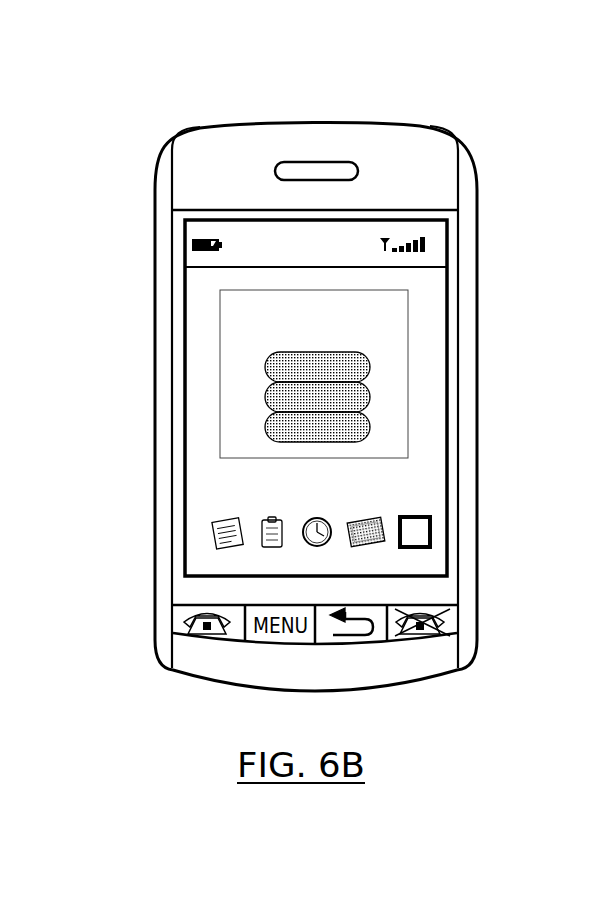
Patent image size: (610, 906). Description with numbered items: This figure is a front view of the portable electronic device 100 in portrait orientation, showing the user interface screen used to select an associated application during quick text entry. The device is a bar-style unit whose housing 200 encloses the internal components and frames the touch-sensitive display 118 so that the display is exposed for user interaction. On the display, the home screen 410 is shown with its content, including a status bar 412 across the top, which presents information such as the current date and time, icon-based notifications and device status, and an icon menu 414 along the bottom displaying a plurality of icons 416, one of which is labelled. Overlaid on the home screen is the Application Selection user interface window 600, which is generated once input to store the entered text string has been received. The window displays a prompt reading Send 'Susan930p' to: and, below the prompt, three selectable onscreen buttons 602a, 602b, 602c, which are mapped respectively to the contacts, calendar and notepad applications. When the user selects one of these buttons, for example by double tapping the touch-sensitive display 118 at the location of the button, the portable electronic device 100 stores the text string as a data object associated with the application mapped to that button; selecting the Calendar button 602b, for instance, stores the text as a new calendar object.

The portable electronic device 100 is at (462, 124).
The housing 200 is at (460, 328).
The touch-sensitive display 118 is at (433, 507).
The status bar 412 is at (442, 248).
The Application Selection user interface window 600 is at (408, 373).
The onscreen button 602a is at (370, 368).
The onscreen button 602b is at (370, 398).
The onscreen button 602c is at (370, 428).
The home screen 410 is at (335, 491).
The icon menu 414 is at (88, 510).
The icon 416 is at (215, 535).